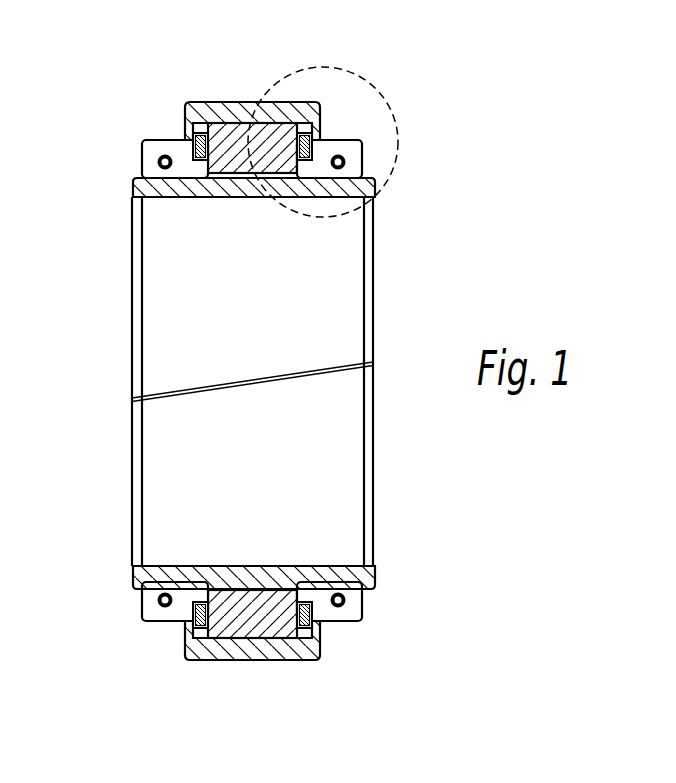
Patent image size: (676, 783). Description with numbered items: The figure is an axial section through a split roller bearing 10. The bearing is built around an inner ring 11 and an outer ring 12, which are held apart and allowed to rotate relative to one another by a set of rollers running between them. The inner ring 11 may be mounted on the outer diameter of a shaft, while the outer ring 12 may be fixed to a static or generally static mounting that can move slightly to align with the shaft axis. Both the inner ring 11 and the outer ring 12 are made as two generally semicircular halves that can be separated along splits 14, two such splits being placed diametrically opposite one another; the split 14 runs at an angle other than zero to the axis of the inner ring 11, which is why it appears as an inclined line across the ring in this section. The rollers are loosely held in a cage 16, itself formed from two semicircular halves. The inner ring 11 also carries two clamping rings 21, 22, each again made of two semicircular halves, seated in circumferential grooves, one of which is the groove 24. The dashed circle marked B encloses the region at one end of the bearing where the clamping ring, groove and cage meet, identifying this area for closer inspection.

The split roller bearing 10 is at (412, 216).
The inner ring 11 is at (188, 197).
The outer ring 12 is at (195, 110).
The split 14 is at (233, 387).
The cage 16 is at (303, 600).
The clamping ring 21 is at (364, 150).
The clamping ring 22 is at (142, 148).
The circumferential groove 24 is at (148, 194).
The detail region B is at (323, 126).